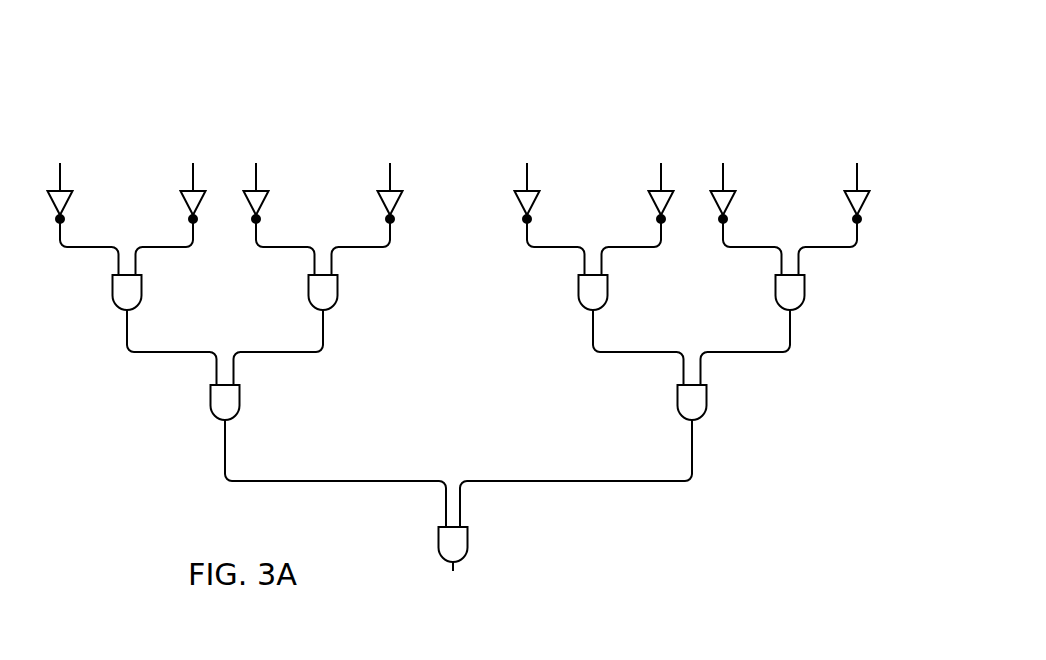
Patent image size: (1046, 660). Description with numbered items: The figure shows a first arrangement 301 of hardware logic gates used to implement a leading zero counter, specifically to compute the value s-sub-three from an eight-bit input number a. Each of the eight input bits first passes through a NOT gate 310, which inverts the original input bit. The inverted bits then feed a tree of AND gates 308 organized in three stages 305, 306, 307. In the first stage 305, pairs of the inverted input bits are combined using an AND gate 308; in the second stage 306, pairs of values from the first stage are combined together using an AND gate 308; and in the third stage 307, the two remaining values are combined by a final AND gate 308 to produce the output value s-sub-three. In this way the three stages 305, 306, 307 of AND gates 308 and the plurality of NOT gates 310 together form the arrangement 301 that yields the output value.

The first arrangement 301 is at (767, 80).
The first stage 305 is at (894, 192).
The second stage 306 is at (894, 338).
The third stage 307 is at (894, 465).
The AND gate 308 is at (329, 295).
The NOT gate 310 is at (394, 206).